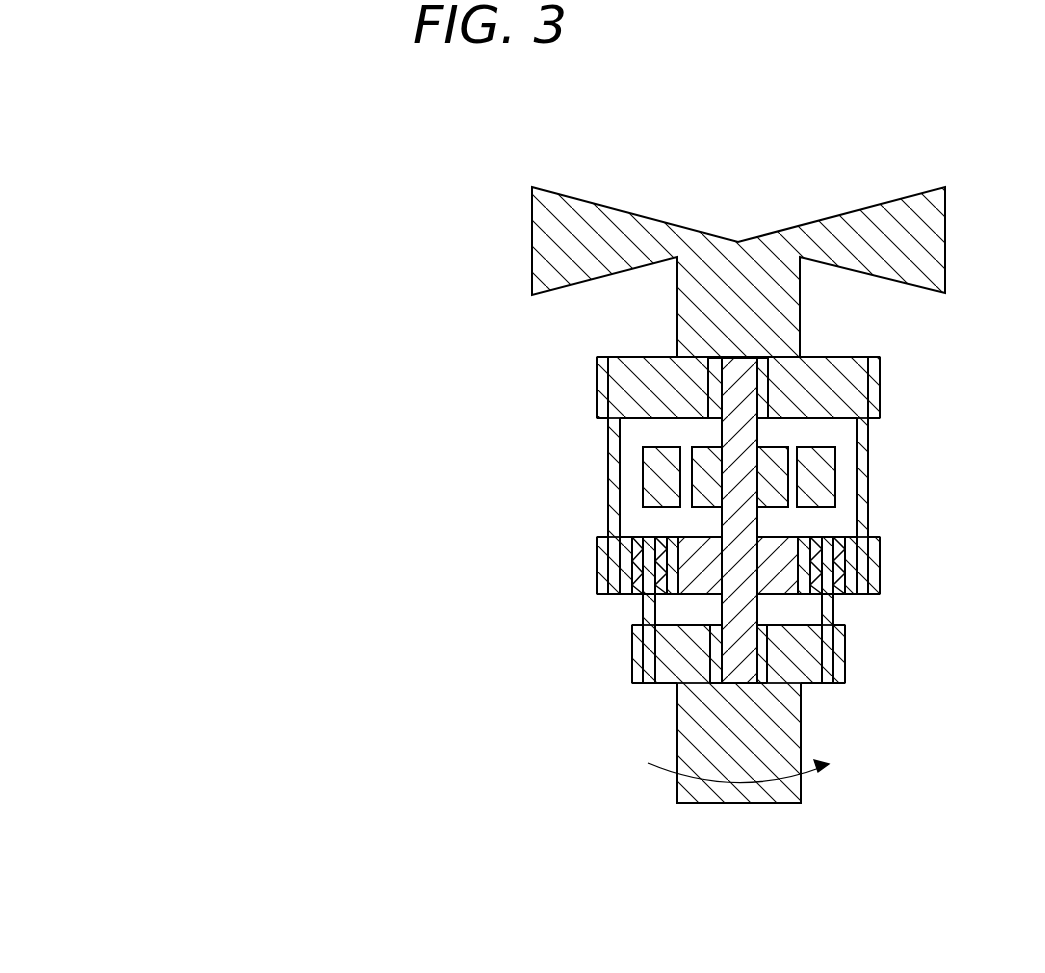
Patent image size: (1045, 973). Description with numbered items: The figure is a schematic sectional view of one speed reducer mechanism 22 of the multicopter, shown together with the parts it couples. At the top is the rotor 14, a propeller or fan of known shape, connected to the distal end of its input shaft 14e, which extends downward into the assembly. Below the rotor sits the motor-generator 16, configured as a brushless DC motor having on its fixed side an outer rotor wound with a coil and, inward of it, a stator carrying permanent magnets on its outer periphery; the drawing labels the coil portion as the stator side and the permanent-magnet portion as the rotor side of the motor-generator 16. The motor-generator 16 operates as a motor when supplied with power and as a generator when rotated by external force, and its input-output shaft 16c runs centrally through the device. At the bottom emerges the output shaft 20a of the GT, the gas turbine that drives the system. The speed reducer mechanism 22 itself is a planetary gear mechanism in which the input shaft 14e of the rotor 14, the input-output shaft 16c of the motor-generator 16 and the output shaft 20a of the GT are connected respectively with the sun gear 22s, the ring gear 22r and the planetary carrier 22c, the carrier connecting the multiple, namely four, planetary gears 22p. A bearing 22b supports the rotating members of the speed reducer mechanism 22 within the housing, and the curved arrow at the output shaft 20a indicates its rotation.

The rotor 14 is at (548, 253).
The input shaft 14e is at (772, 322).
The motor-generator 16 is at (720, 507).
The input-output shaft 16c is at (740, 522).
The output shaft 20a is at (782, 725).
The speed reducer mechanism 22 is at (253, 763).
The bearing 22b is at (634, 594).
The ring gear 22r is at (647, 595).
The planetary gears 22p is at (680, 595).
The planetary carrier 22c is at (645, 640).
The sun gear 22s is at (700, 594).